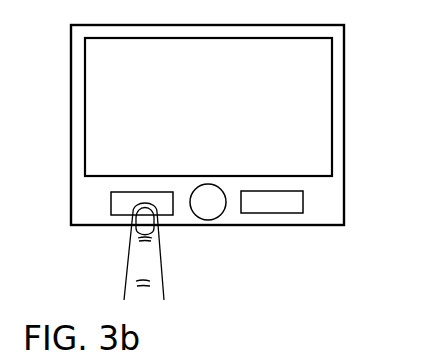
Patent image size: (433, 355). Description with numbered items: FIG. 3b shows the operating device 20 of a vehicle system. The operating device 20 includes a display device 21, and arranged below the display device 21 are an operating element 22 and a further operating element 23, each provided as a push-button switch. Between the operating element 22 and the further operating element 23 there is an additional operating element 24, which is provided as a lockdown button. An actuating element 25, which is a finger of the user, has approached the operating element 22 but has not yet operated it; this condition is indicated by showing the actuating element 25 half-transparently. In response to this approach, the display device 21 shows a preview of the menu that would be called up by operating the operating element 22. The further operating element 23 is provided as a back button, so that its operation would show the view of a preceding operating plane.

The operating device 20 is at (339, 53).
The display device 21 is at (319, 117).
The operating element 22 is at (115, 212).
The further operating element 23 is at (293, 212).
The additional operating element 24 is at (212, 209).
The actuating element 25 is at (151, 250).